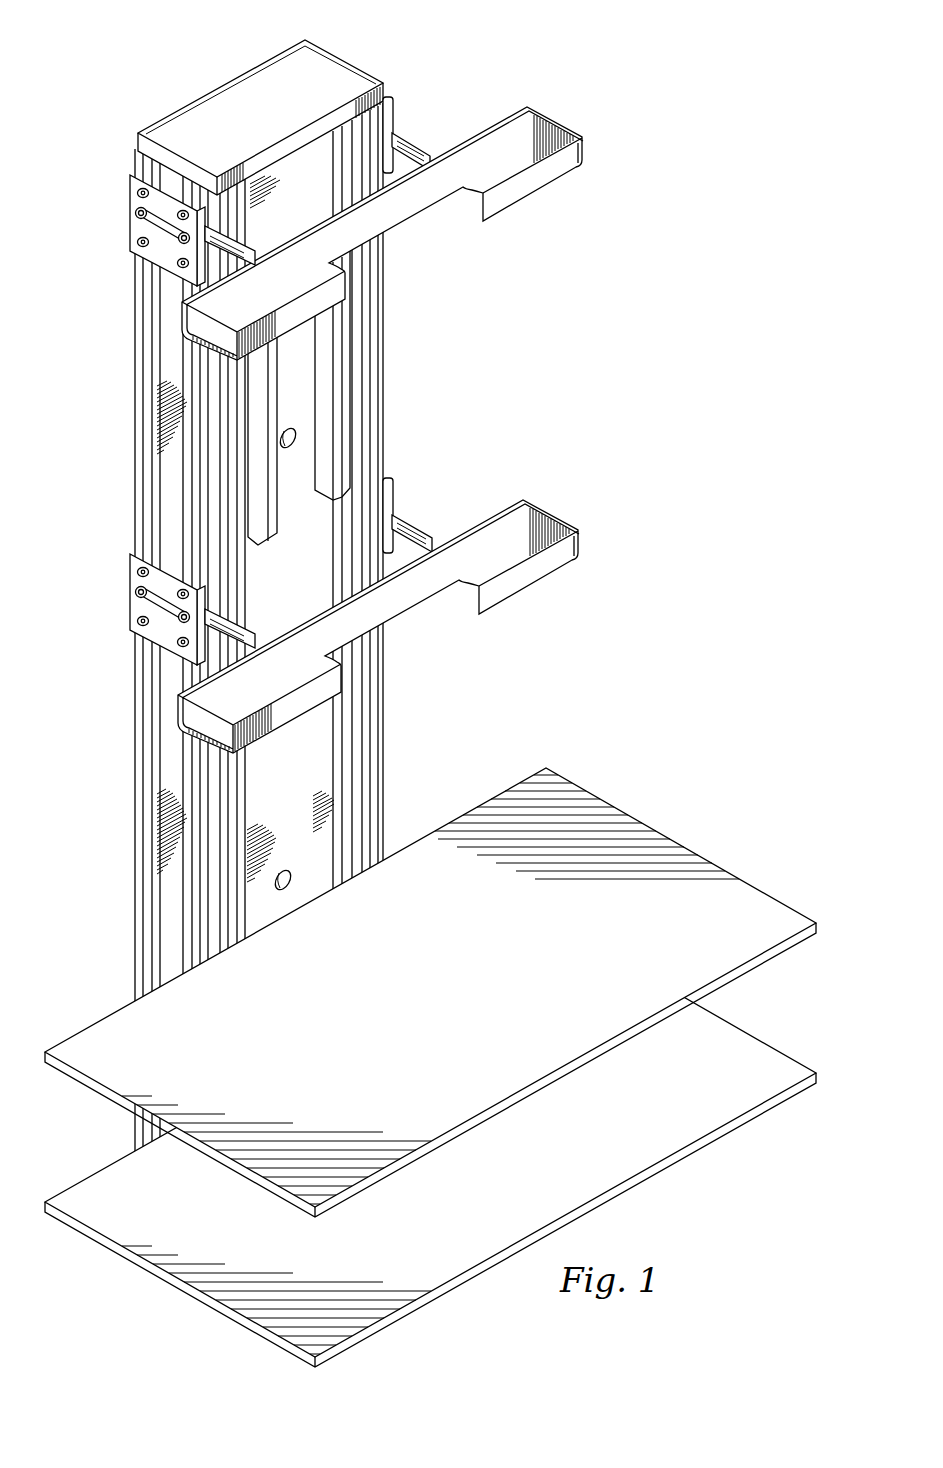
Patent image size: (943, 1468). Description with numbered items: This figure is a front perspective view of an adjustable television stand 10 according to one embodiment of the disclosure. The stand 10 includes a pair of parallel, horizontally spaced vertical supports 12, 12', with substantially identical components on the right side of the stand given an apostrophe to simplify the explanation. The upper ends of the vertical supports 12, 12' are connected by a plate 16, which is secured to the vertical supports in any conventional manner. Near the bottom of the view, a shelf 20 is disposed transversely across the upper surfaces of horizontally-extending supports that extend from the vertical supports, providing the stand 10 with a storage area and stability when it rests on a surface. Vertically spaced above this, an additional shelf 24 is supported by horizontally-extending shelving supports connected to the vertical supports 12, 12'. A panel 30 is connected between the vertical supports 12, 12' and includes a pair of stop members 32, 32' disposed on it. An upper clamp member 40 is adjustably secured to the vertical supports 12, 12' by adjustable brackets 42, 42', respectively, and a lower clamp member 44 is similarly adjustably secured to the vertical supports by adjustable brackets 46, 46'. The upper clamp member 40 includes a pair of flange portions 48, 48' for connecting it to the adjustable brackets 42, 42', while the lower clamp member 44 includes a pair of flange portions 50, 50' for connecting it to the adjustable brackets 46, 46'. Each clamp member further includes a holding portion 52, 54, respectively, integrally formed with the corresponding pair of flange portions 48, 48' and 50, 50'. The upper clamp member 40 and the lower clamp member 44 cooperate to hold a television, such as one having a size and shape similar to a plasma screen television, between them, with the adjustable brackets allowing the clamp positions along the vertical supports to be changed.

The adjustable television stand 10 is at (697, 351).
The vertical support 12 is at (157, 657).
The vertical support 12' is at (349, 634).
The plate 16 is at (243, 83).
The shelf 20 is at (768, 1057).
The additional shelf 24 is at (768, 910).
The panel 30 is at (303, 789).
The stop member 32 is at (286, 437).
The stop member 32' is at (373, 371).
The upper clamp member 40 is at (388, 210).
The adjustable bracket 42 is at (137, 230).
The adjustable bracket 42' is at (415, 117).
The lower clamp member 44 is at (379, 626).
The adjustable bracket 46 is at (137, 609).
The adjustable bracket 46' is at (414, 499).
The flange portion 48 is at (248, 233).
The flange portion 48' is at (427, 135).
The flange portion 50 is at (248, 618).
The flange portion 50' is at (426, 518).
The holding portion 52 is at (530, 186).
The holding portion 54 is at (527, 587).